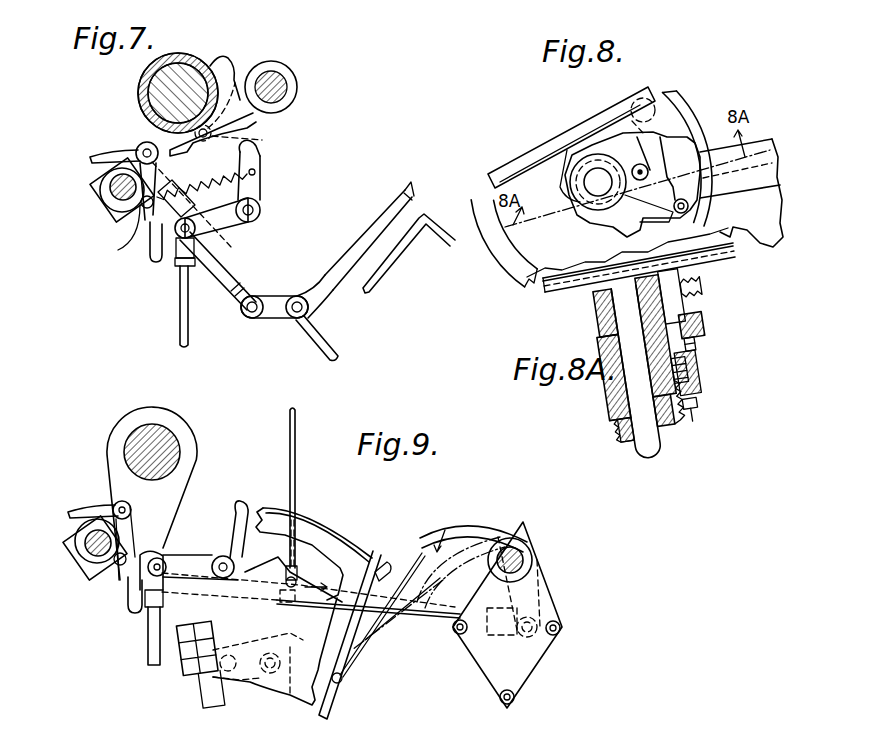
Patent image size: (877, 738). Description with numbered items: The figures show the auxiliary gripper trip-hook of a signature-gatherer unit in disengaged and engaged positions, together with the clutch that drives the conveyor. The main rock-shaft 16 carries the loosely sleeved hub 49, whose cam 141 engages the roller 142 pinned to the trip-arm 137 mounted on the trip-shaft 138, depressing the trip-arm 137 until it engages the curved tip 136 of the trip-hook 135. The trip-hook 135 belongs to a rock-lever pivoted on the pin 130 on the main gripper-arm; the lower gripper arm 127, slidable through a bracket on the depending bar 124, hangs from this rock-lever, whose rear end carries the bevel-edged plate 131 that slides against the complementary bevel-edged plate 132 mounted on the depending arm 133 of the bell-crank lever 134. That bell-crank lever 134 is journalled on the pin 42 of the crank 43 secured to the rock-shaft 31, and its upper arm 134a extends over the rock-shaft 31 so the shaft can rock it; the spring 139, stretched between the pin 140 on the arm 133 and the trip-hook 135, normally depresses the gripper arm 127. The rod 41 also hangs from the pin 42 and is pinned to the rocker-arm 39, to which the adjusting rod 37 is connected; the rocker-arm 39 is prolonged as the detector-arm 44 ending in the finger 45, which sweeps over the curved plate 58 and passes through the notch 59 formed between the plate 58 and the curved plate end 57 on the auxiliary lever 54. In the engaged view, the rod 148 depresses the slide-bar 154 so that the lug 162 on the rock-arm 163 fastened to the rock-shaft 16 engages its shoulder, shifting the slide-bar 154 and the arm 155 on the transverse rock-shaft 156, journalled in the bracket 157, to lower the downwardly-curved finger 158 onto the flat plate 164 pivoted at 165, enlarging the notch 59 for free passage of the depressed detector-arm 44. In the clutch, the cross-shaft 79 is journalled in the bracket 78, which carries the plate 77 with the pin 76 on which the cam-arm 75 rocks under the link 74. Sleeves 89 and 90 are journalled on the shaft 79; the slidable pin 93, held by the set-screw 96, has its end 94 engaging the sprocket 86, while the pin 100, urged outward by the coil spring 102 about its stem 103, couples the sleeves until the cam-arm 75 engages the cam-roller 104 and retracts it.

In FIG. 7, the rock-shaft 16 is at (186, 75).
In FIG. 9, the rock-shaft 16 is at (167, 445).
In FIG. 7, the hub 49 is at (168, 62).
In FIG. 7, the trip-shaft 138 is at (290, 86).
In FIG. 7, the cam 141 is at (225, 70).
In FIG. 7, the trip-arm 137 is at (213, 129).
In FIG. 7, the roller 142 is at (260, 141).
In FIG. 7, the pin 42 is at (145, 142).
In FIG. 9, the pin 42 is at (115, 505).
In FIG. 7, the crank 43 is at (112, 164).
In FIG. 9, the crank 43 is at (85, 516).
In FIG. 7, the upper arm 134a is at (118, 158).
In FIG. 9, the upper arm 134a is at (105, 512).
In FIG. 7, the rock-shaft 31 is at (110, 190).
In FIG. 9, the rock-shaft 31 is at (82, 541).
In FIG. 7, the pin 140 is at (125, 248).
In FIG. 7, the depending arm 133 is at (155, 242).
In FIG. 9, the depending arm 133 is at (130, 582).
In FIG. 7, the bevel-edged plate 132 is at (160, 268).
In FIG. 9, the bevel-edged plate 132 is at (135, 620).
In FIG. 7, the spring 139 is at (193, 192).
In FIG. 7, the bevel-edged plate 131 is at (196, 220).
In FIG. 9, the bevel-edged plate 131 is at (118, 563).
In FIG. 7, the trip-hook 135 is at (262, 186).
In FIG. 9, the trip-hook 135 is at (240, 540).
In FIG. 7, the curved tip 136 is at (266, 156).
In FIG. 9, the curved tip 136 is at (236, 503).
In FIG. 7, the pin 130 is at (260, 211).
In FIG. 9, the pin 130 is at (222, 558).
In FIG. 7, the lug 162 is at (197, 268).
In FIG. 9, the lug 162 is at (162, 558).
In FIG. 7, the rod 41 is at (222, 253).
In FIG. 7, the lower gripper arm 127 is at (188, 330).
In FIG. 9, the lower gripper arm 127 is at (149, 644).
In FIG. 7, the rocker-arm 39 is at (318, 291).
In FIG. 9, the rocker-arm 39 is at (300, 696).
In FIG. 7, the detector-arm 44 is at (376, 238).
In FIG. 7, the finger 45 is at (405, 200).
In FIG. 7, the adjusting rod 37 is at (318, 346).
In FIG. 8, the cross-shaft 79 is at (598, 186).
In FIG. 8A, the cross-shaft 79 is at (646, 447).
In FIG. 8, the sprocket 86 is at (703, 118).
In FIG. 8, the plate 77 is at (598, 123).
In FIG. 8, the pin 76 is at (662, 141).
In FIG. 8, the stem 103 is at (638, 169).
In FIG. 8A, the stem 103 is at (683, 416).
In FIG. 8, the cam-arm 75 is at (653, 204).
In FIG. 8A, the cam-arm 75 is at (708, 336).
In FIG. 8, the link 74 is at (747, 171).
In FIG. 8, the bracket 78 is at (758, 233).
In FIG. 8A, the sleeve 89 is at (596, 308).
In FIG. 8A, the sleeve 90 is at (610, 374).
In FIG. 8A, the slidable pin 93 is at (666, 292).
In FIG. 8A, the end 94 is at (704, 252).
In FIG. 8A, the set-screw 96 is at (690, 295).
In FIG. 8A, the pin 100 is at (696, 354).
In FIG. 8A, the cam-roller 104 is at (702, 368).
In FIG. 8A, the coil spring 102 is at (697, 383).
In FIG. 9, the rock-arm 163 is at (172, 502).
In FIG. 9, the bell-crank lever 134 is at (176, 529).
In FIG. 9, the depending bar 124 is at (200, 697).
In FIG. 9, the rod 148 is at (297, 480).
In FIG. 9, the curved plate end 57 is at (322, 520).
In FIG. 9, the auxiliary lever 54 is at (312, 546).
In FIG. 9, the notch 59 is at (385, 562).
In FIG. 9, the curved plate 58 is at (382, 593).
In FIG. 9, the flat plate 164 is at (412, 562).
In FIG. 9, the pivot 165 is at (345, 679).
In FIG. 9, the slide-bar 154 is at (432, 616).
In FIG. 9, the downwardly-curved finger 158 is at (458, 522).
In FIG. 9, the transverse rock-shaft 156 is at (510, 558).
In FIG. 9, the arm 155 is at (525, 598).
In FIG. 9, the bracket 157 is at (535, 660).